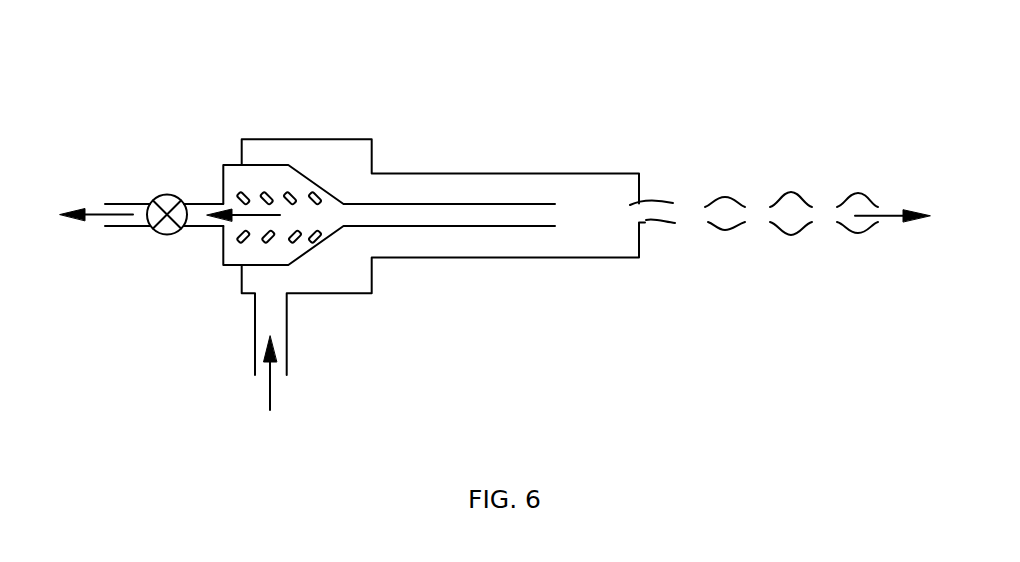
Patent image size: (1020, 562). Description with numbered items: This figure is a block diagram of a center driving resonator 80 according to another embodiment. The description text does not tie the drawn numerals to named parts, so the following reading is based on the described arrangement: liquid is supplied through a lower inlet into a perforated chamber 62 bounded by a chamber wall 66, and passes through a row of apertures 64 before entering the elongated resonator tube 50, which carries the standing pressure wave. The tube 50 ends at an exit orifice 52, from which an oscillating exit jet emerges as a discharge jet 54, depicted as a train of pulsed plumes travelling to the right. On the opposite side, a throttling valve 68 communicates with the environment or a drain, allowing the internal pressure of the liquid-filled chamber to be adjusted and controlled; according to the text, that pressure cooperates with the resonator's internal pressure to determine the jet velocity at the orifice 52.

The nebulizer assembly 80 is at (515, 88).
The nozzle body 50 is at (580, 208).
The outlet orifice 52 is at (641, 203).
The aerosol plume 54 is at (655, 218).
The chamber inlet wall 62 is at (218, 200).
The apertures 64 is at (266, 236).
The chamber wall 66 is at (224, 165).
The valve 68 is at (157, 197).